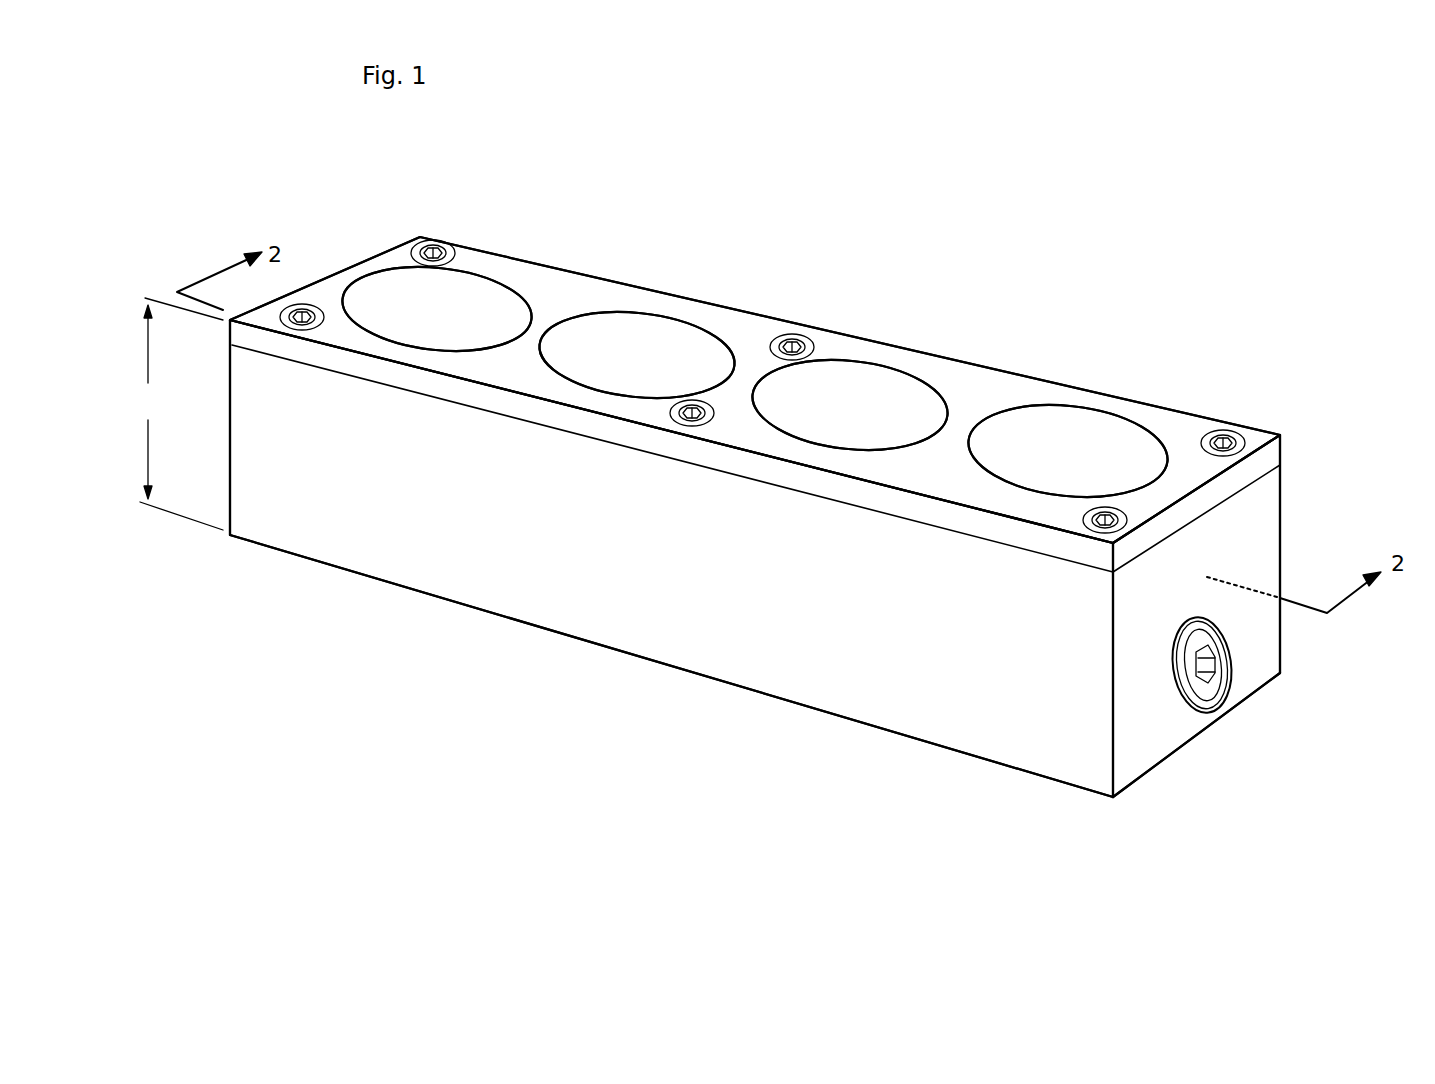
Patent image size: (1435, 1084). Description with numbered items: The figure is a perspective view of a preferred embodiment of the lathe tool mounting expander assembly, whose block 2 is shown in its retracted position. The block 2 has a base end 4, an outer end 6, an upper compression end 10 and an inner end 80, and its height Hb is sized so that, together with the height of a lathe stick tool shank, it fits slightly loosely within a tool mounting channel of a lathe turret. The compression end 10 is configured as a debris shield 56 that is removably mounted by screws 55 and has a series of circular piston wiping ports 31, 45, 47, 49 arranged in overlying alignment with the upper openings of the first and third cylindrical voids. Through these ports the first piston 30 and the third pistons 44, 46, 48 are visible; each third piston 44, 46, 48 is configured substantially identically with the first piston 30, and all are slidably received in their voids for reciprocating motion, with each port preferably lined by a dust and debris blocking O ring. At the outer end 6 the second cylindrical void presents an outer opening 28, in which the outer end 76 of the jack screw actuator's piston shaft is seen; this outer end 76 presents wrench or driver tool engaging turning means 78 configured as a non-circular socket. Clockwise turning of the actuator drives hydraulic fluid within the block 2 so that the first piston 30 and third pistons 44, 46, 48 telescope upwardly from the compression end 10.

The block 2 is at (663, 590).
The base end 4 is at (870, 725).
The outer end 6 is at (1143, 753).
The upper compression end 10 is at (1268, 493).
The outer opening 28 is at (1192, 705).
The first piston 30 is at (482, 297).
The piston wiping port 31 is at (398, 272).
The third piston 44 is at (642, 342).
The piston wiping port 45 is at (723, 332).
The third piston 46 is at (850, 398).
The piston wiping port 47 is at (937, 383).
The third piston 48 is at (1065, 442).
The piston wiping port 49 is at (1152, 425).
The screws 55 is at (440, 250).
The debris shield 56 is at (1247, 473).
The outer end of shaft 76 is at (1205, 690).
The turning means 78 is at (1210, 665).
The inner end 80 is at (228, 485).
The height of the block Hb is at (178, 414).